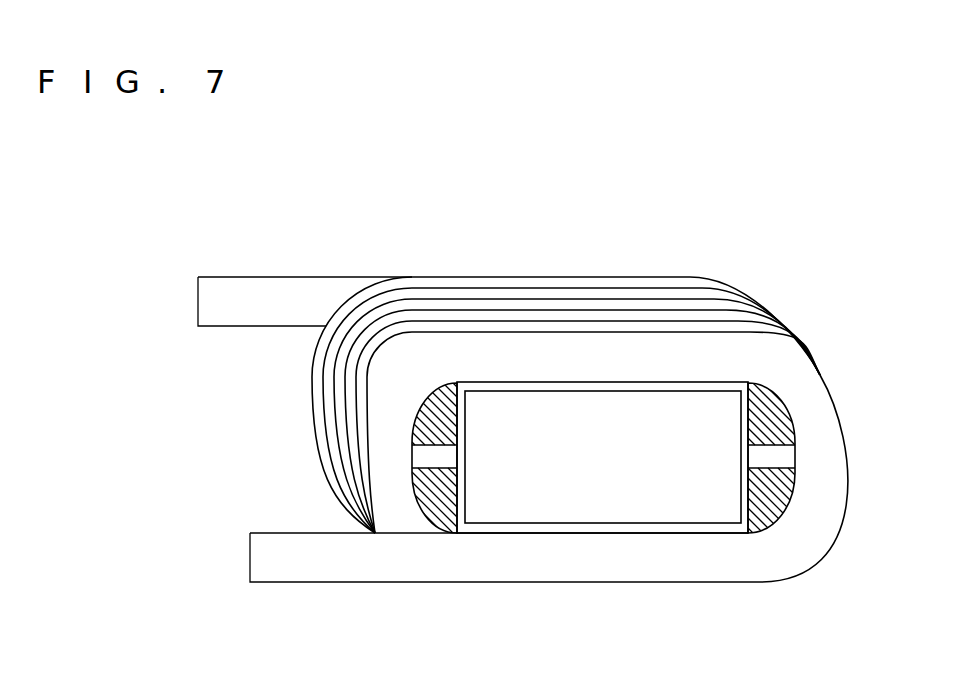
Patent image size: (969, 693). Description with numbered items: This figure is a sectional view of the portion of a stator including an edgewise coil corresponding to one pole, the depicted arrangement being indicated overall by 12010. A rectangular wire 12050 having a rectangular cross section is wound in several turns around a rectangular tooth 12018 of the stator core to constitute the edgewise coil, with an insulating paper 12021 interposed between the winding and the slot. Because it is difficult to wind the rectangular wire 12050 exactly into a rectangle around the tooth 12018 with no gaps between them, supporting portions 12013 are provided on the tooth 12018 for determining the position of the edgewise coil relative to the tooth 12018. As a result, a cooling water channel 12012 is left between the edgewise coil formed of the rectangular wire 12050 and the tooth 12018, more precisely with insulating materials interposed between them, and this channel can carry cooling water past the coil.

The coil component 12010 is at (200, 268).
The rectangular wire 12050 is at (822, 403).
The insulating paper 12021 is at (747, 517).
The tooth 12018 is at (608, 502).
The cooling water channel 12012 is at (448, 422).
The supporting portions 12013 is at (423, 463).